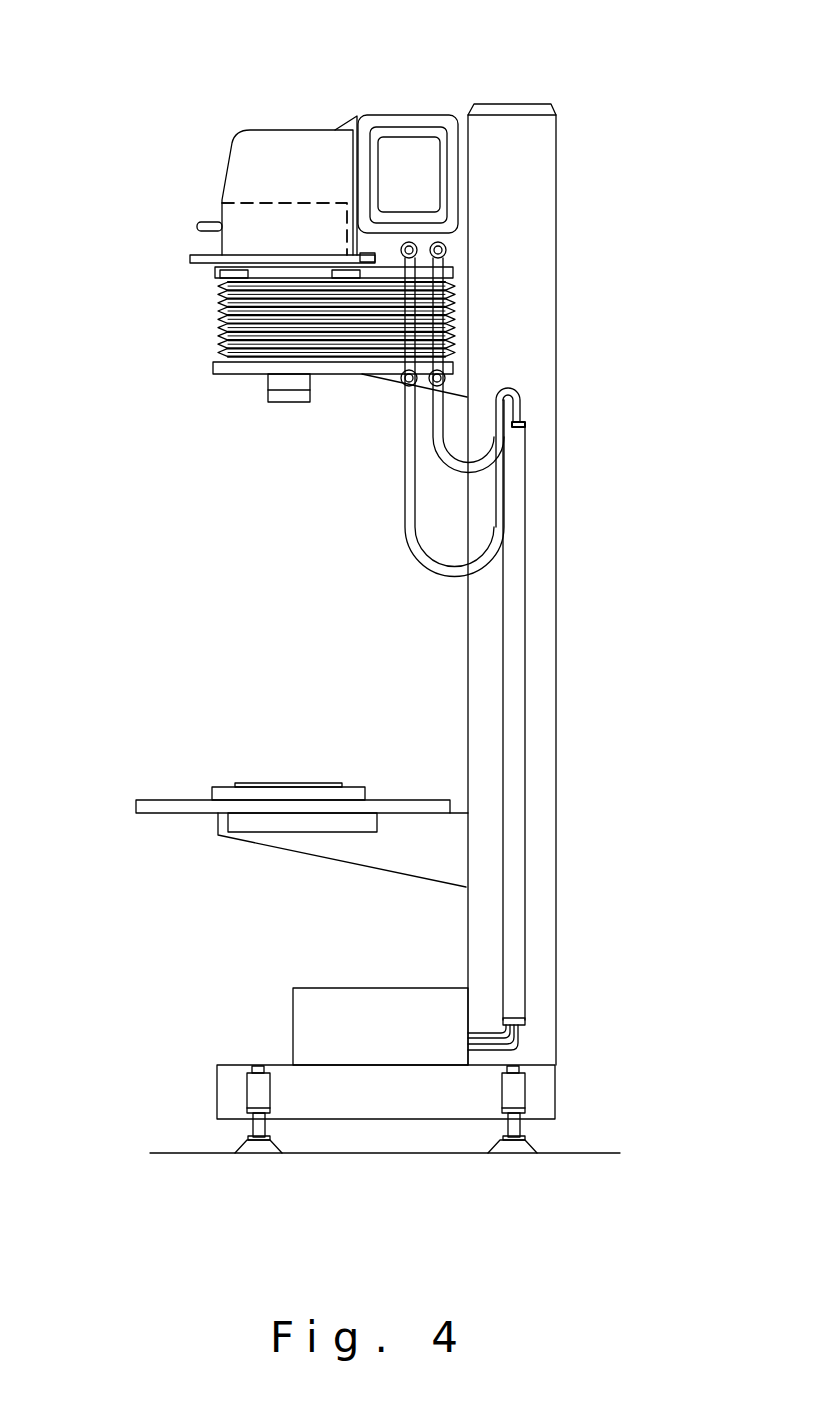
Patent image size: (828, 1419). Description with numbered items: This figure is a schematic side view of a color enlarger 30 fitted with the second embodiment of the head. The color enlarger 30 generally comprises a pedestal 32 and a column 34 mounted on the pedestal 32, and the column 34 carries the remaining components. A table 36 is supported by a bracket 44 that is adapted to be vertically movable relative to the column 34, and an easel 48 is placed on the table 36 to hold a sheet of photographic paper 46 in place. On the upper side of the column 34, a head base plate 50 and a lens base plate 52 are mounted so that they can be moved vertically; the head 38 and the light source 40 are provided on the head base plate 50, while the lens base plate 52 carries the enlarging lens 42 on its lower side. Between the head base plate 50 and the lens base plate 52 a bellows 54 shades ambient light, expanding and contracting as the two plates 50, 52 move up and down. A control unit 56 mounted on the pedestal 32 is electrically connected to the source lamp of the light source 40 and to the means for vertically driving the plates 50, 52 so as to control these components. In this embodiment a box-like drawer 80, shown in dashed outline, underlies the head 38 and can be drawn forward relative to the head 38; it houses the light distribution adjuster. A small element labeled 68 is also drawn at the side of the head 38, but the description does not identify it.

The color enlarger 30 is at (606, 129).
The pedestal 32 is at (398, 1107).
The column 34 is at (543, 684).
The table 36 is at (180, 805).
The head 38 is at (262, 120).
The light source 40 is at (412, 111).
The enlarging lens 42 is at (294, 398).
The bracket 44 is at (312, 842).
The sheet of photographic paper 46 is at (326, 784).
The easel 48 is at (217, 784).
The head base plate 50 is at (218, 277).
The lens base plate 52 is at (215, 366).
The bellows 54 is at (218, 318).
The control unit 56 is at (305, 1030).
The mounting bracket 68 is at (205, 258).
The drawer 80 is at (215, 207).